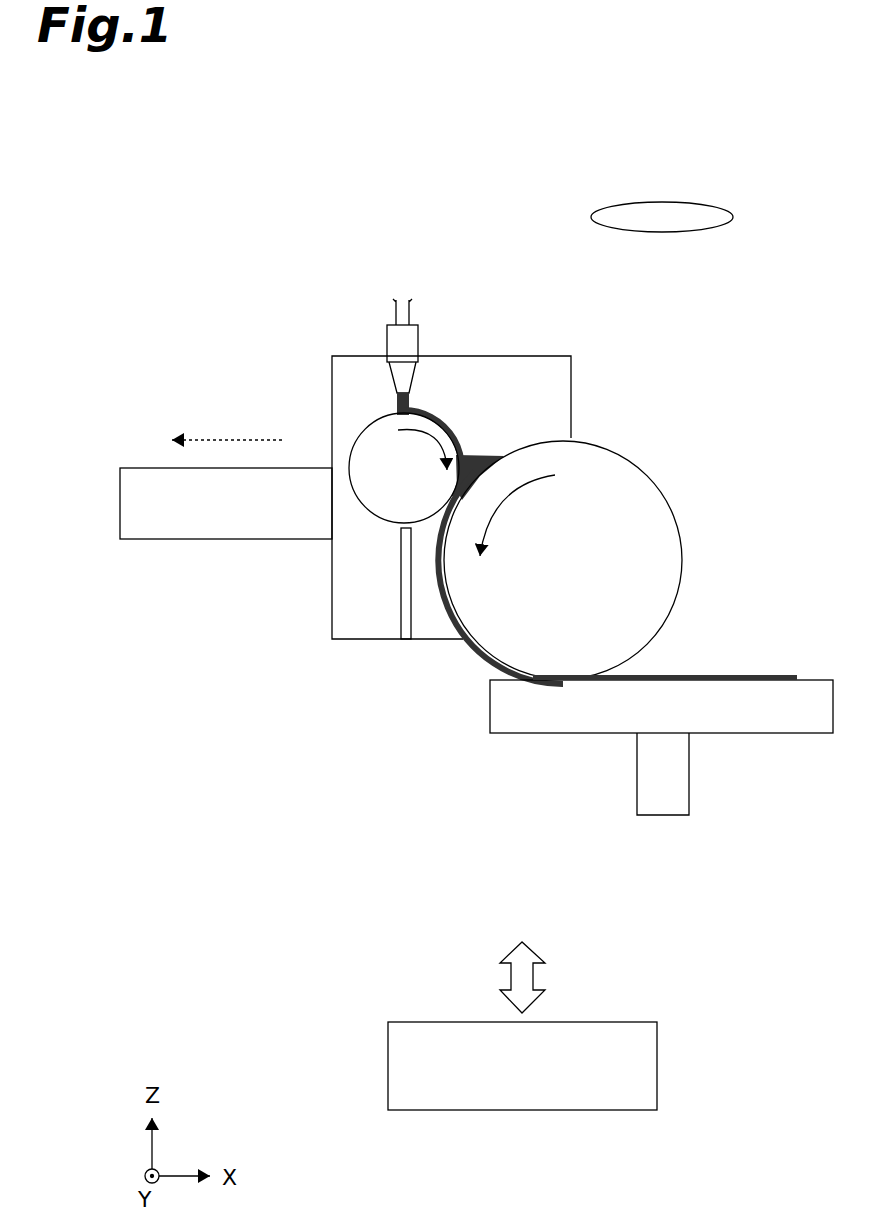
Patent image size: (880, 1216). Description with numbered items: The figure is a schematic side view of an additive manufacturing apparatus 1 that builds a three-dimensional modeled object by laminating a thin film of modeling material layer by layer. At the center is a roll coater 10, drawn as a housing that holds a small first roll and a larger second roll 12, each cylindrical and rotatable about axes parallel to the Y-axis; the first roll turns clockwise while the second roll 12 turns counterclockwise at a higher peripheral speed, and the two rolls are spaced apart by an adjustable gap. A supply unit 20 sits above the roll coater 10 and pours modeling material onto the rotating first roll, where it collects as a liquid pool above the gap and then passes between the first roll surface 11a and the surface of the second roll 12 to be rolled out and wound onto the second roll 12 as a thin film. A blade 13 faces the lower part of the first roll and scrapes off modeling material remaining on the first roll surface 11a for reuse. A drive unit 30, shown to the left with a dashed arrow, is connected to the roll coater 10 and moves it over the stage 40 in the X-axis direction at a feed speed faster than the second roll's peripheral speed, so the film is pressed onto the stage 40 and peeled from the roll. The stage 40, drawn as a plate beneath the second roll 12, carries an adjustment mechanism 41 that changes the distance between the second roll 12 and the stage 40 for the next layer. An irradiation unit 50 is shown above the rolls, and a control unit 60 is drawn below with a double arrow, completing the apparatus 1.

The additive manufacturing apparatus 1 is at (130, 158).
The roll coater 10 is at (345, 356).
The supply unit 20 is at (390, 325).
The first roll surface 11a is at (352, 428).
The second roll 12 is at (610, 448).
The blade 13 is at (400, 562).
The drive unit 30 is at (140, 468).
The stage 40 is at (490, 710).
The adjustment mechanism 41 is at (637, 780).
The irradiation unit 50 is at (692, 200).
The control unit 60 is at (657, 1068).